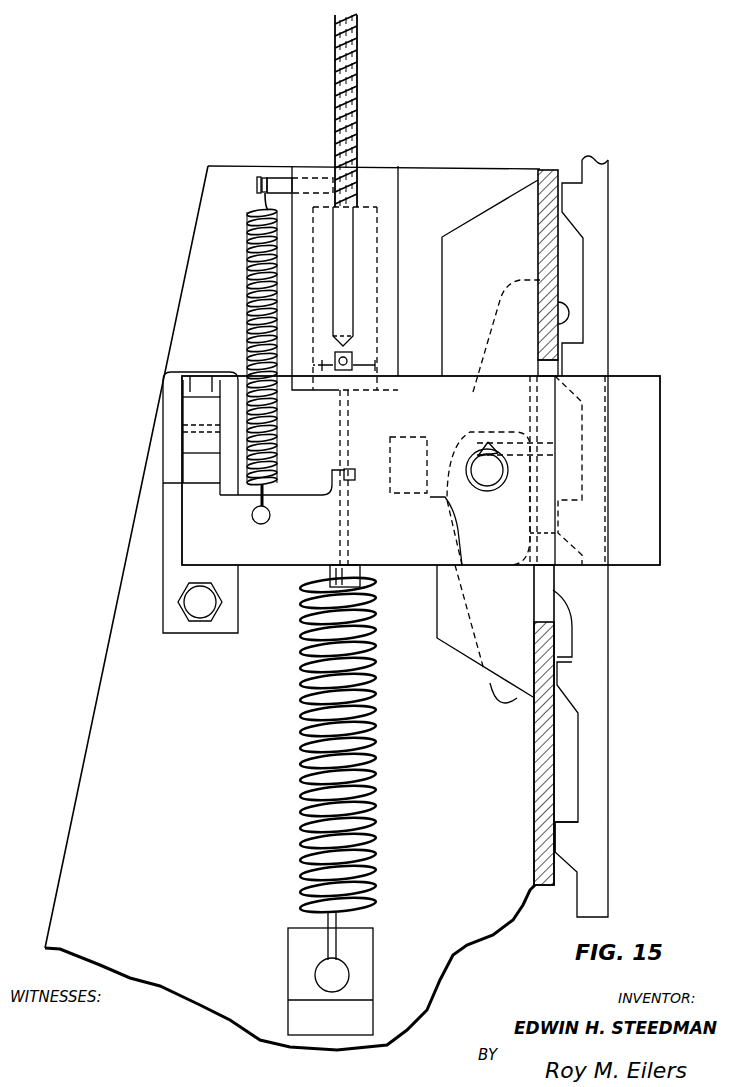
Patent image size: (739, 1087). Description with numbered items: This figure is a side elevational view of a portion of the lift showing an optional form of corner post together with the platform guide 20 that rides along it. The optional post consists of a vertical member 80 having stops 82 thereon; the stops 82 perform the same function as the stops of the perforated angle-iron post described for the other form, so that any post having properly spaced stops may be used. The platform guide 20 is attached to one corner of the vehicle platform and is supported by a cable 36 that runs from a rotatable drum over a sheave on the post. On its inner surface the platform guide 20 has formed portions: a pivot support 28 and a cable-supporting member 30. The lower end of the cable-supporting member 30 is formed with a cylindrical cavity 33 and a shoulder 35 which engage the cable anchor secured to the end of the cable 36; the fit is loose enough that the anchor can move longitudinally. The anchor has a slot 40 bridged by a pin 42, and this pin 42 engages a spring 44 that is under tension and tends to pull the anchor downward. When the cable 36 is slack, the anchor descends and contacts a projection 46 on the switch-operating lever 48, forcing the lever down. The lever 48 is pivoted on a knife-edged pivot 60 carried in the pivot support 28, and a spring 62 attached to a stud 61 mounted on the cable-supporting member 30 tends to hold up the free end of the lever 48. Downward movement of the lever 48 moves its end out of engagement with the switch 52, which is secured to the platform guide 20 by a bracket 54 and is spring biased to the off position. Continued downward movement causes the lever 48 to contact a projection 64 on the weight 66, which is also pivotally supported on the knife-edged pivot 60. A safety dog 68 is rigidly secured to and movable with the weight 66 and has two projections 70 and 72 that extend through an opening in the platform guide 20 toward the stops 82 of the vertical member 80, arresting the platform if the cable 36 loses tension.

The platform guide 20 is at (143, 752).
The pivot support 28 is at (510, 200).
The cable-supporting member 30 is at (385, 178).
The cylindrical cavity 33 is at (369, 340).
The shoulder 35 is at (362, 208).
The cable 36 is at (358, 85).
The slot 40 is at (338, 352).
The pin 42 is at (352, 362).
The spring 44 is at (300, 800).
The projection 46 is at (352, 470).
The switch-operating lever 48 is at (213, 510).
The switch 52 is at (203, 417).
The bracket 54 is at (172, 540).
The knife-edged pivot 60 is at (490, 470).
The stud 61 is at (285, 183).
The spring 62 is at (250, 249).
The projection 64 is at (352, 574).
The weight 66 is at (648, 401).
The safety dog 68 is at (498, 688).
The projection 70 is at (562, 313).
The projection 72 is at (582, 645).
The vertical member 80 is at (608, 218).
The stops 82 is at (560, 828).